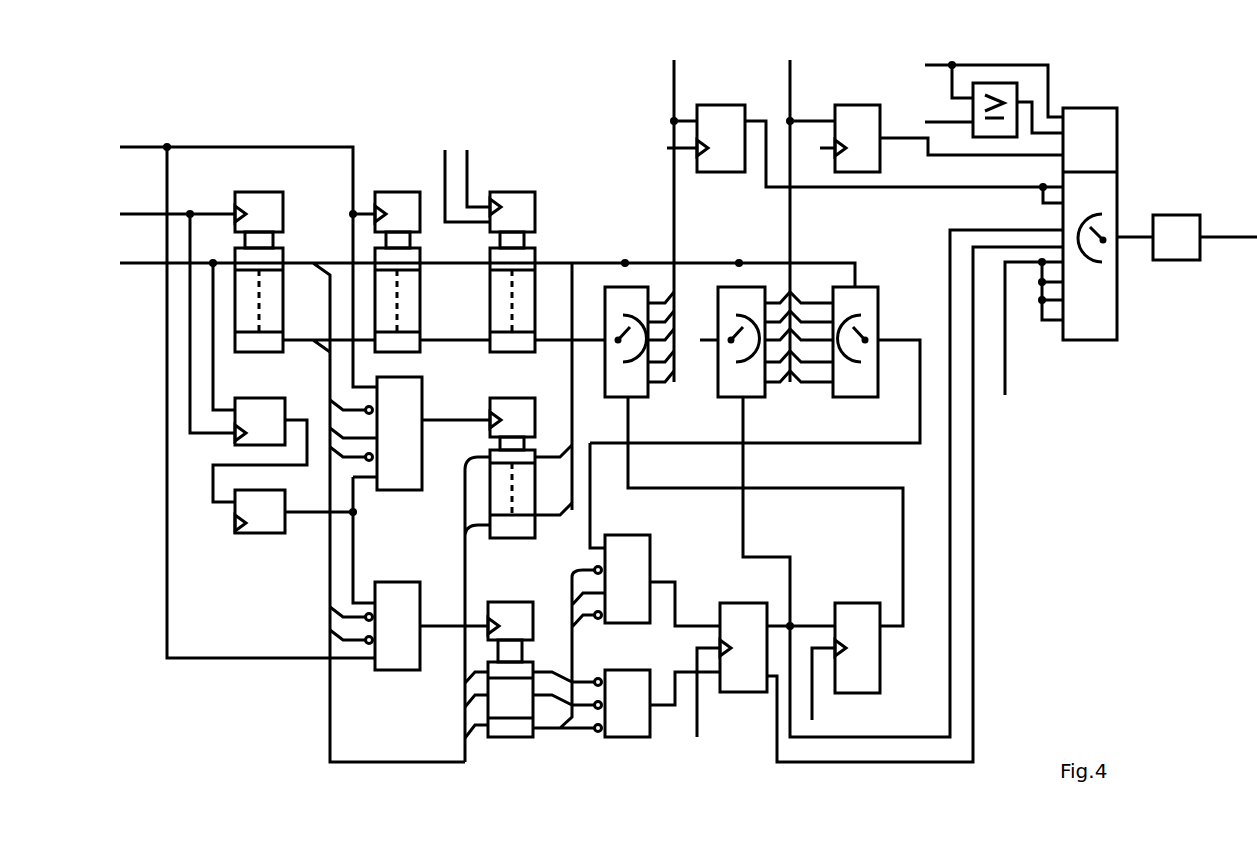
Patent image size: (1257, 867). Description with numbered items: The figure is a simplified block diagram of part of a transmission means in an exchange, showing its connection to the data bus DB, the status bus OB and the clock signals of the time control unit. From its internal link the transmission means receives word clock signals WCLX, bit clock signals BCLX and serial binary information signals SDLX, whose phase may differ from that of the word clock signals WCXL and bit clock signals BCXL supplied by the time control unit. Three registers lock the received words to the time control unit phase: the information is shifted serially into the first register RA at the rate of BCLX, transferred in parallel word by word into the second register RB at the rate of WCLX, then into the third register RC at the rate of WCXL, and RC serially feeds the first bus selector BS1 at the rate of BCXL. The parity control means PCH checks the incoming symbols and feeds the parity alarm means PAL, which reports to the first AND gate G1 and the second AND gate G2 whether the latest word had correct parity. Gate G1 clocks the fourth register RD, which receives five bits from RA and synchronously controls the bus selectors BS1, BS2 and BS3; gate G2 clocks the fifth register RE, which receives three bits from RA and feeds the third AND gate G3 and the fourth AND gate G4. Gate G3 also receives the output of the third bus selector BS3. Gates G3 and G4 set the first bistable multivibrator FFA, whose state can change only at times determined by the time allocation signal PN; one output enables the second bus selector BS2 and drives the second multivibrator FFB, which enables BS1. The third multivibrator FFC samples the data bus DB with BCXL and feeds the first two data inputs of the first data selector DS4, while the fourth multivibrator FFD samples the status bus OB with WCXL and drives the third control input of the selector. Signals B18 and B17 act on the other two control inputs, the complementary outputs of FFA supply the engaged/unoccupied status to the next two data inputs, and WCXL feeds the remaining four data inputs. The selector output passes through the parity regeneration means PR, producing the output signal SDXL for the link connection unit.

The first register RA is at (305, 260).
The second register RB is at (432, 260).
The third register RC is at (604, 260).
The fourth register RD is at (518, 568).
The fifth register RE is at (535, 653).
The parity control means PCH is at (260, 437).
The parity alarm means PAL is at (306, 536).
The first AND gate G1 is at (410, 421).
The second AND gate G2 is at (409, 612).
The third AND gate G3 is at (655, 534).
The fourth AND gate G4 is at (662, 693).
The first bus selector BS1 is at (754, 448).
The second bus selector BS2 is at (890, 483).
The third bus selector BS3 is at (755, 357).
The first bistable multivibrator FFA is at (891, 504).
The second multivibrator FFB is at (846, 649).
The third multivibrator FFC is at (880, 138).
The fourth multivibrator FFD is at (949, 123).
The first data selector DS4 is at (1063, 205).
The parity regeneration means PR is at (1176, 224).
The word clock signals WCLX is at (248, 388).
The bit clock signals BCLX is at (166, 312).
The binary information signals SDLX is at (476, 501).
The word clock signals WCXL is at (728, 273).
The bit clock signals BCXL is at (582, 166).
The data bus DB is at (677, 205).
The status bus OB is at (806, 205).
The signal B18 is at (994, 76).
The signal B17 is at (948, 110).
The serial output information signal SDXL is at (1228, 226).
The time allocation signal PN is at (701, 710).